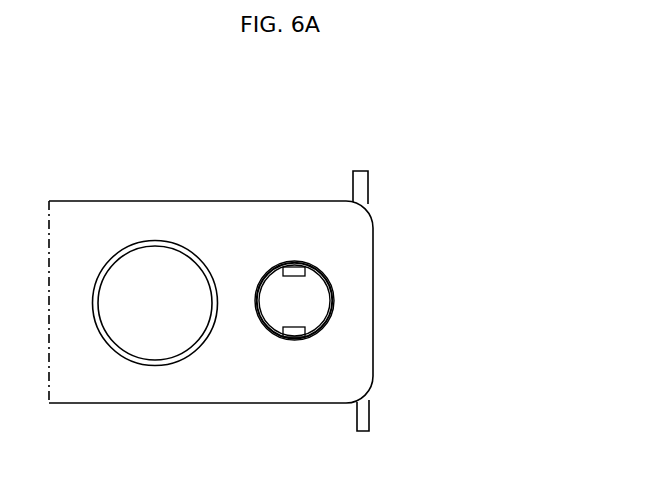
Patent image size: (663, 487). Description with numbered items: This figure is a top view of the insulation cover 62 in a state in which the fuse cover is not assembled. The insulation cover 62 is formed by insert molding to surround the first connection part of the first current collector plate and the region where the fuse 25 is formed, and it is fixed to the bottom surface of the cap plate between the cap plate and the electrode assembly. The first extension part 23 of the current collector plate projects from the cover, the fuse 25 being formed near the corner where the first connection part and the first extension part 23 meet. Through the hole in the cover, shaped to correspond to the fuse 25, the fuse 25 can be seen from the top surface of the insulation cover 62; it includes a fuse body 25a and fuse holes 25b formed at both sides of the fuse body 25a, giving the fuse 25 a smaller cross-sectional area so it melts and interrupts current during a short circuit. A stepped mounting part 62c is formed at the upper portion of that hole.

The insulation cover 62 is at (231, 207).
The first extension part 23 is at (368, 181).
The stepped mounting part 62c is at (302, 261).
The fuse 25 is at (400, 301).
The fuse body 25a is at (293, 317).
The fuse hole 25b is at (305, 268).